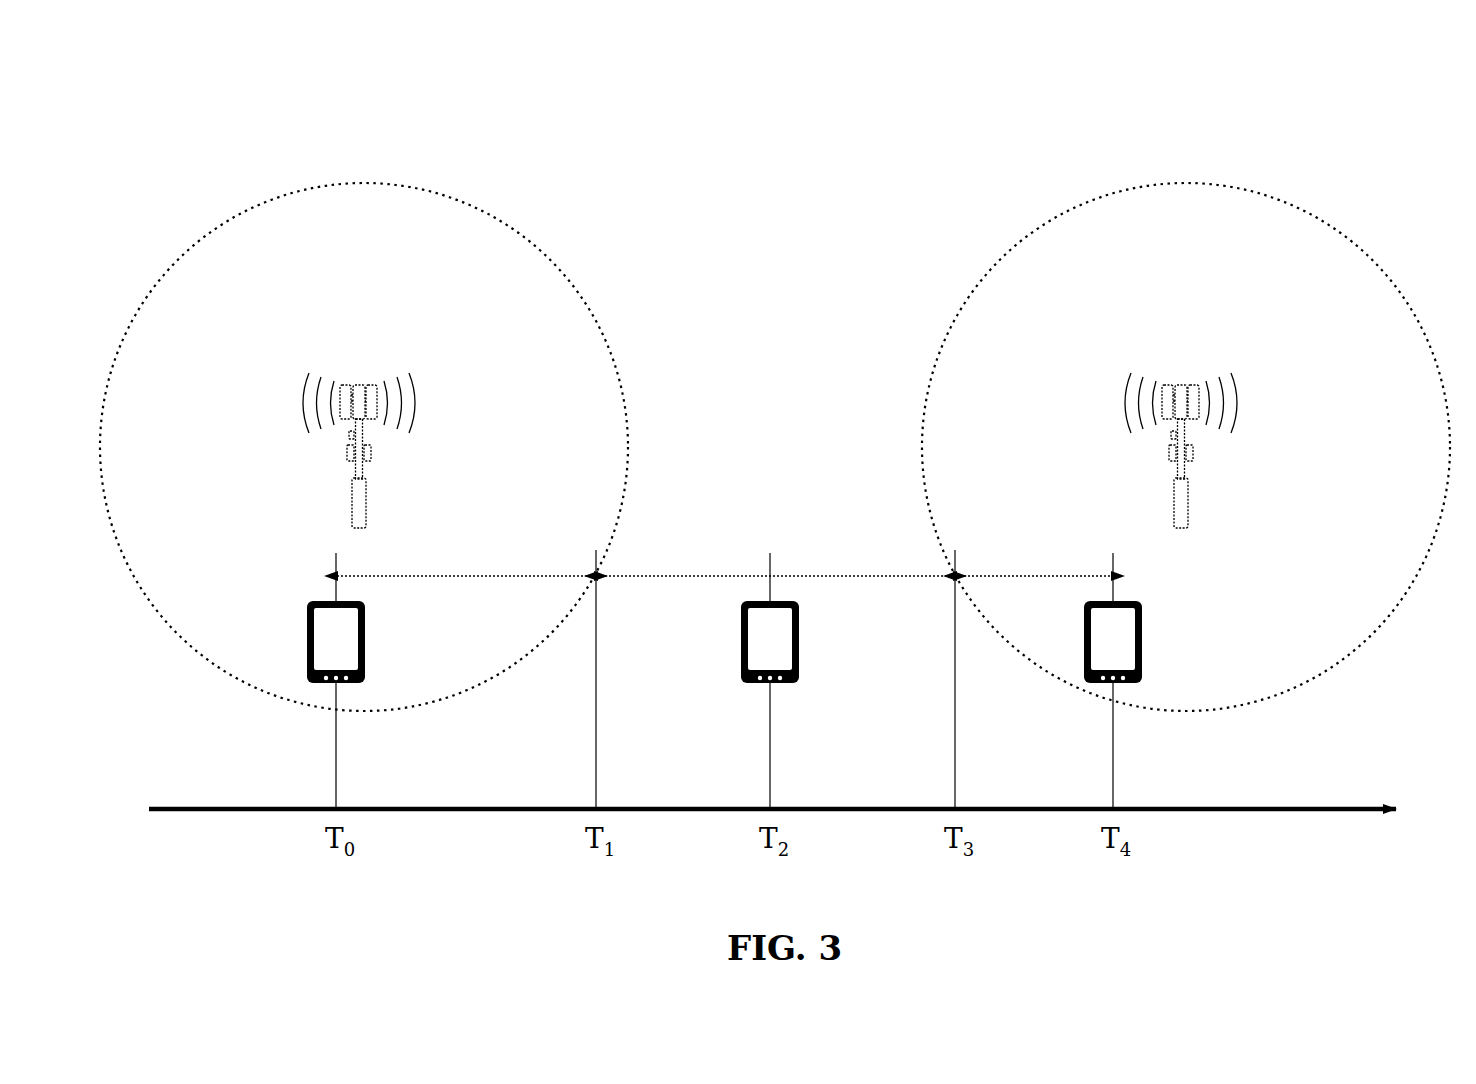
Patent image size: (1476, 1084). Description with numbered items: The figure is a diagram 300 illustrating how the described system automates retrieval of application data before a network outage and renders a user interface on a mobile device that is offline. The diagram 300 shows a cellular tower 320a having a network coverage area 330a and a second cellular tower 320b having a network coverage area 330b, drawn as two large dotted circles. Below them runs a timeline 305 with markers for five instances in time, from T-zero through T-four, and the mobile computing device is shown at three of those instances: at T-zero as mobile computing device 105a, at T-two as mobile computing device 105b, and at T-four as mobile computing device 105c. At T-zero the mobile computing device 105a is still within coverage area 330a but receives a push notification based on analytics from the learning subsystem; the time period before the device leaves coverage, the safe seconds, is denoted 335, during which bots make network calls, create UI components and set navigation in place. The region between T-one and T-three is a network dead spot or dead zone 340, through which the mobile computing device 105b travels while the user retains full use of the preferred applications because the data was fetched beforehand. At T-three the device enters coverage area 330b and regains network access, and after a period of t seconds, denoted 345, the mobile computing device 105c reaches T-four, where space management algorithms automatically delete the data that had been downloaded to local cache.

The diagram 300 is at (216, 80).
The timeline 305 is at (202, 810).
The mobile computing device 105a is at (306, 634).
The mobile computing device 105b is at (740, 617).
The mobile computing device 105c is at (1142, 640).
The cellular tower 320a is at (352, 484).
The cellular tower 320b is at (1188, 490).
The network coverage area 330a is at (490, 206).
The network coverage area 330b is at (1320, 206).
The safe seconds time period 335 is at (443, 575).
The network dead zone 340 is at (802, 575).
The time period of t seconds 345 is at (1030, 575).